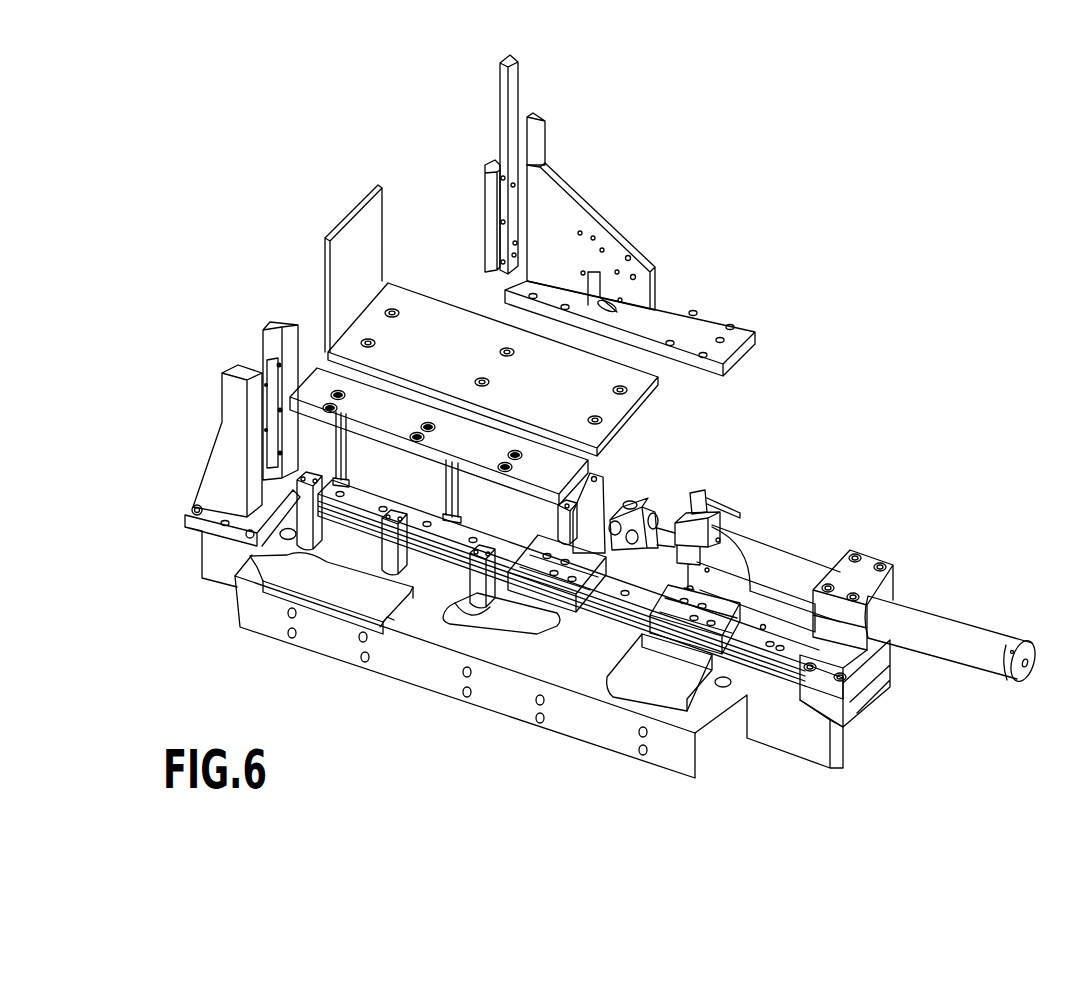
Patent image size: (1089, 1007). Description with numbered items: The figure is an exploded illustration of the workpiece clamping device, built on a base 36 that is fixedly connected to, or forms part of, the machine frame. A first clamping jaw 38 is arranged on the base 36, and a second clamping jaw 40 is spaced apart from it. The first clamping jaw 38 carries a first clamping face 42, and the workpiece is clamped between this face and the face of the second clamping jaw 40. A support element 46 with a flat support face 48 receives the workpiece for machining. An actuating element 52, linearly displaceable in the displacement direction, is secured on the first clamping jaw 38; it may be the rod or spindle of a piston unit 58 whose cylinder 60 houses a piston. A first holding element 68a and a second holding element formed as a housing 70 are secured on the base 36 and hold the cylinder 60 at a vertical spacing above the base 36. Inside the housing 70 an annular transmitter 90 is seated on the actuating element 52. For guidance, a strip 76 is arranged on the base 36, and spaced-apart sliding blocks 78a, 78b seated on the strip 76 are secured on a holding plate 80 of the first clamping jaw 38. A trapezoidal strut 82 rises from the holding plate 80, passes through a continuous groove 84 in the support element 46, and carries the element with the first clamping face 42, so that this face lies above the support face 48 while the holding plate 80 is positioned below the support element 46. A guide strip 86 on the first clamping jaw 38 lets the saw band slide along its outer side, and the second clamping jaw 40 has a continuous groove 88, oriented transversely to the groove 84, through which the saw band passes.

The base 36 is at (403, 665).
The first clamping jaw 38 is at (540, 140).
The second clamping jaw 40 is at (338, 258).
The first clamping face 42 is at (498, 162).
The support element 46 is at (627, 386).
The support face 48 is at (453, 323).
The actuating element 52 is at (665, 535).
The piston unit 58 is at (932, 625).
The cylinder 60 is at (700, 460).
The first holding element 68a is at (870, 553).
The housing 70 is at (717, 523).
The strip 76 is at (775, 665).
The sliding block 78a is at (545, 575).
The sliding block 78b is at (690, 620).
The holding plate 80 is at (740, 330).
The strut 82 is at (613, 253).
The continuous groove 84 is at (387, 383).
The guide strip 86 is at (493, 165).
The continuous groove 88 is at (263, 363).
The transmitter 90 is at (707, 490).